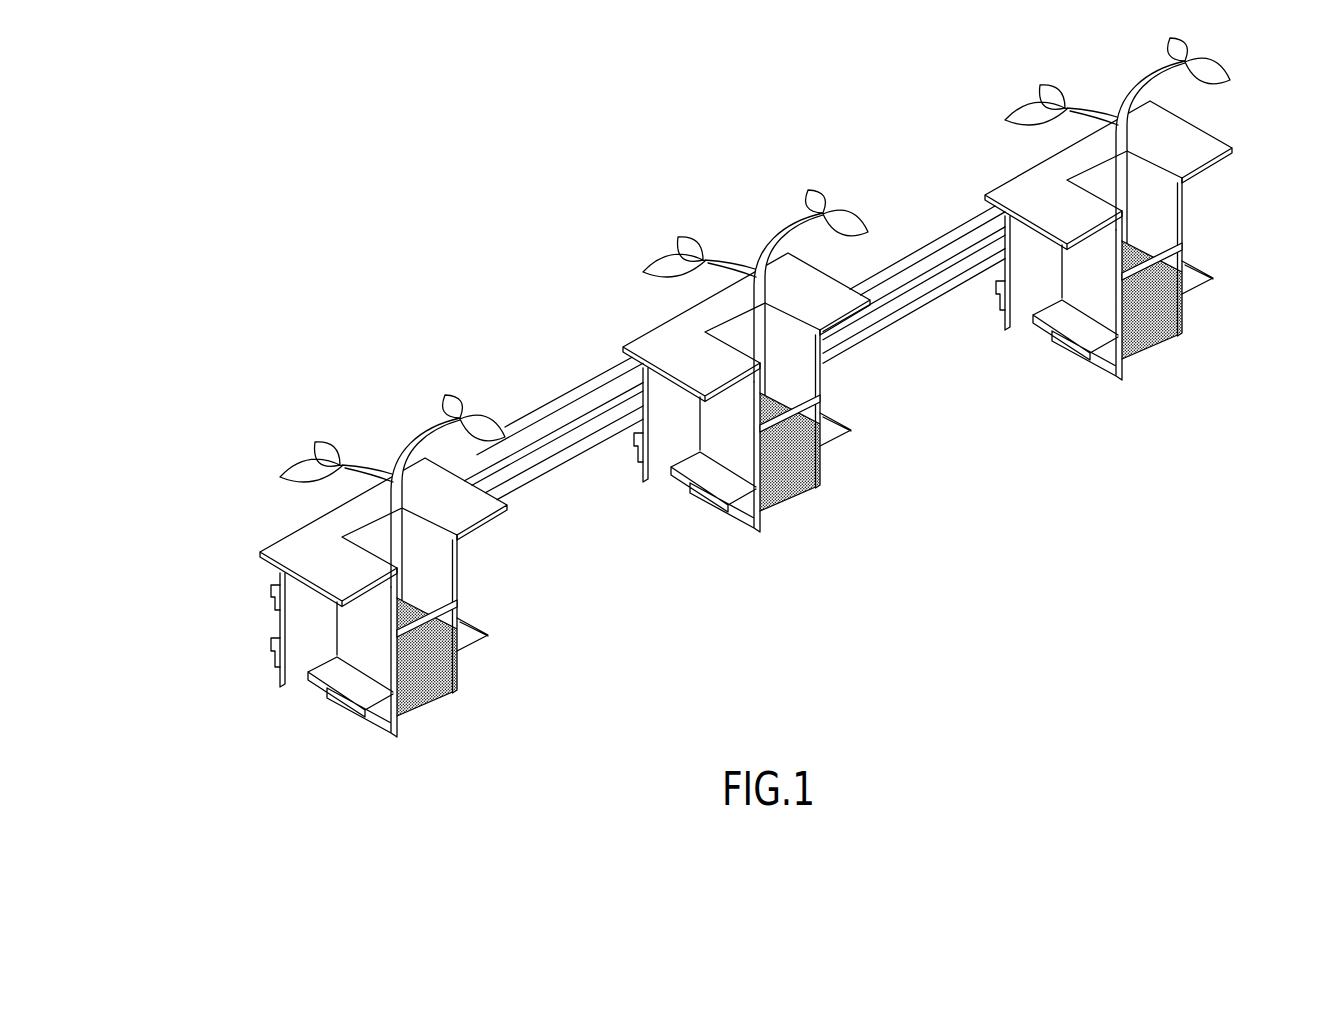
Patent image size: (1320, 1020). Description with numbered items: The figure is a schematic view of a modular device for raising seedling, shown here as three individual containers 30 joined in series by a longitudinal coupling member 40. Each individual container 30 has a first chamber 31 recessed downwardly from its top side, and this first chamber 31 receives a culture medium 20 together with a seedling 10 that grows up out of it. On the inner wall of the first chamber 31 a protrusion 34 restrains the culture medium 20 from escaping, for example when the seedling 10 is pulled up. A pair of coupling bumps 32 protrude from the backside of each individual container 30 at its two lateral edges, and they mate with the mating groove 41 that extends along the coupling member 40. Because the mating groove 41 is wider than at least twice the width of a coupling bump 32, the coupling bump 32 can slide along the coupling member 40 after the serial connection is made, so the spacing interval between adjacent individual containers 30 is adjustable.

The seedling 10 is at (672, 273).
The culture medium 20 is at (423, 690).
The individual container 30 is at (310, 708).
The first chamber 31 is at (430, 563).
The coupling bump 32 is at (271, 648).
The protrusion 34 is at (1182, 262).
The coupling member 40 is at (553, 430).
The mating groove 41 is at (897, 303).